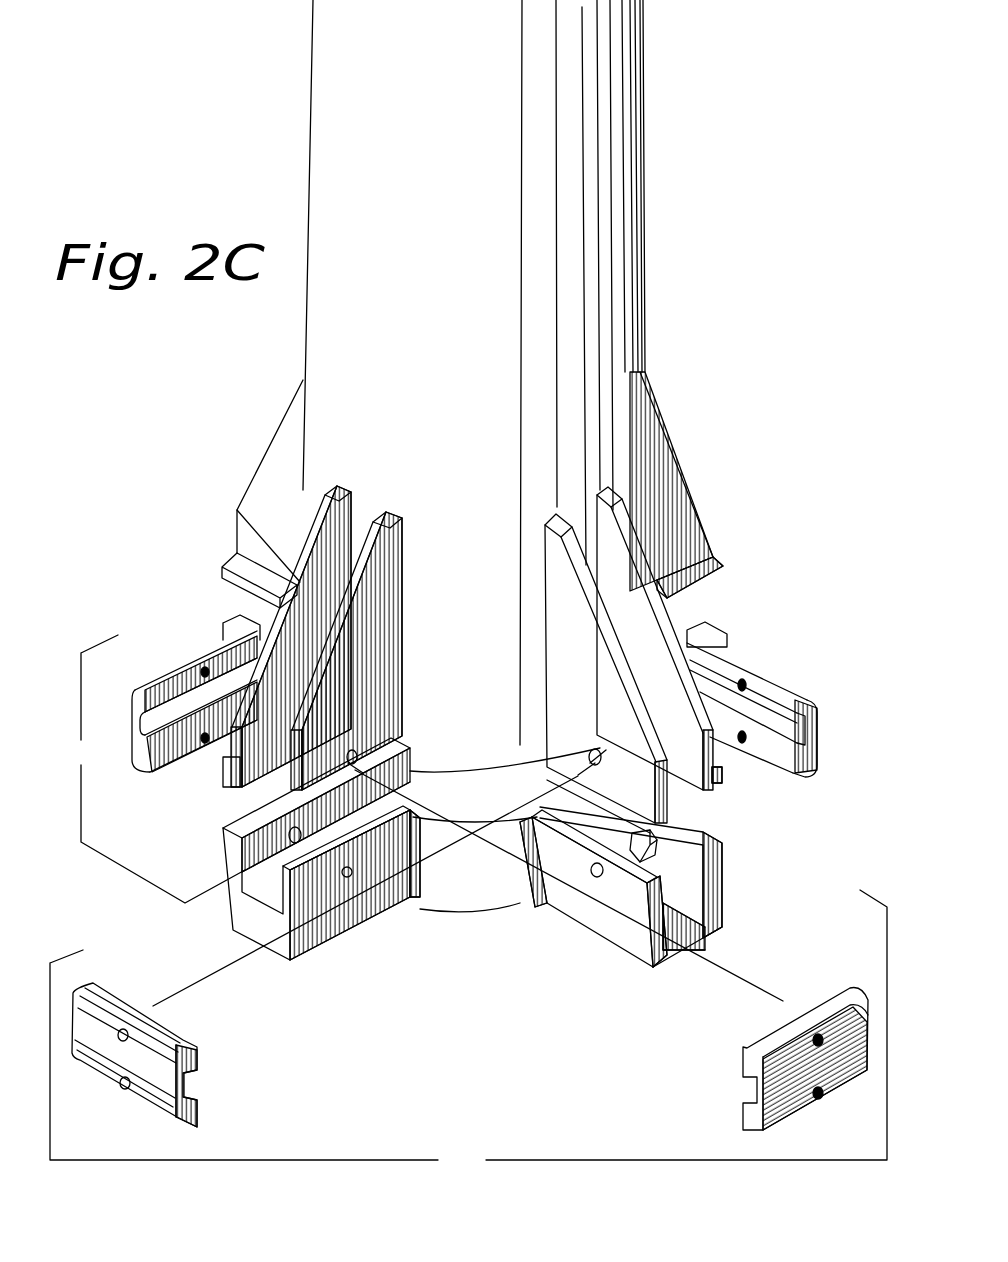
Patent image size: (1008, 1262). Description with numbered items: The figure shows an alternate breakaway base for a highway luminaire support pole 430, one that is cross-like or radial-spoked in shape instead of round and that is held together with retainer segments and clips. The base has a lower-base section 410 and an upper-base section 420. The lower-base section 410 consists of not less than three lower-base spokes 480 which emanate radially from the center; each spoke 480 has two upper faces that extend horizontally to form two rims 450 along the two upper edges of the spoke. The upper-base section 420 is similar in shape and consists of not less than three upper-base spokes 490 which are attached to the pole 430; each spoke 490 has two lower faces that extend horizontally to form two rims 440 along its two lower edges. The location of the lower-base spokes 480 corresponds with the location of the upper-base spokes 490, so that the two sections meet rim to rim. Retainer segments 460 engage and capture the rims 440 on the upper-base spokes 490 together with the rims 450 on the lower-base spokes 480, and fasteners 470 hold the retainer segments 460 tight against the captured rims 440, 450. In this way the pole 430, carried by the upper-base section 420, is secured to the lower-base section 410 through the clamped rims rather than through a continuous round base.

The lower-base section 410 is at (468, 972).
The upper-base section 420 is at (156, 769).
The highway luminaire support pole 430 is at (617, 153).
The rims 440 is at (223, 772).
The rims 450 is at (257, 817).
The retainer segments 460 is at (204, 655).
The fasteners 470 is at (637, 853).
The lower-base spokes 480 is at (710, 923).
The upper-base spokes 490 is at (295, 585).